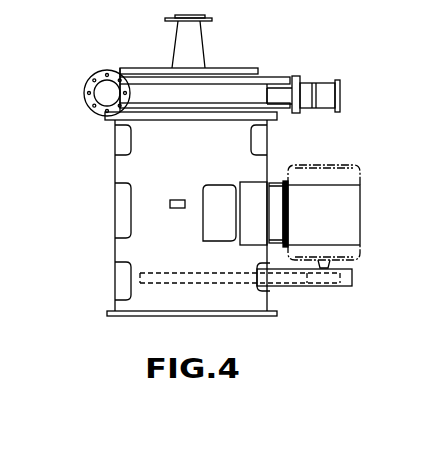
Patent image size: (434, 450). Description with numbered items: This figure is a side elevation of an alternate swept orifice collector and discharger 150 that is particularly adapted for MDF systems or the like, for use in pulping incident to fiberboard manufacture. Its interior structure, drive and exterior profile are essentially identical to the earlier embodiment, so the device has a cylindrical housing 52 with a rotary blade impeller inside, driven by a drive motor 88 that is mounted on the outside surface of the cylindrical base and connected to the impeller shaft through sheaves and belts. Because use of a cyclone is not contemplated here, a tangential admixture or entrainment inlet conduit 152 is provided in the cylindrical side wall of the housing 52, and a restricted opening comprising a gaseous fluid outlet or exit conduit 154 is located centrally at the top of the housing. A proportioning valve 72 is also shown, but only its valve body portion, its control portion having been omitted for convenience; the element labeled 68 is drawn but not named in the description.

The cylindrical housing 52 is at (104, 64).
The outlet flange 68 is at (293, 108).
The proportioning valve 72 is at (318, 108).
The drive motor 88 is at (362, 202).
The swept orifice collector and discharger 150 is at (99, 139).
The tangential admixture or entrainment inlet conduit 152 is at (91, 110).
The gaseous fluid outlet or exit conduit 154 is at (200, 33).